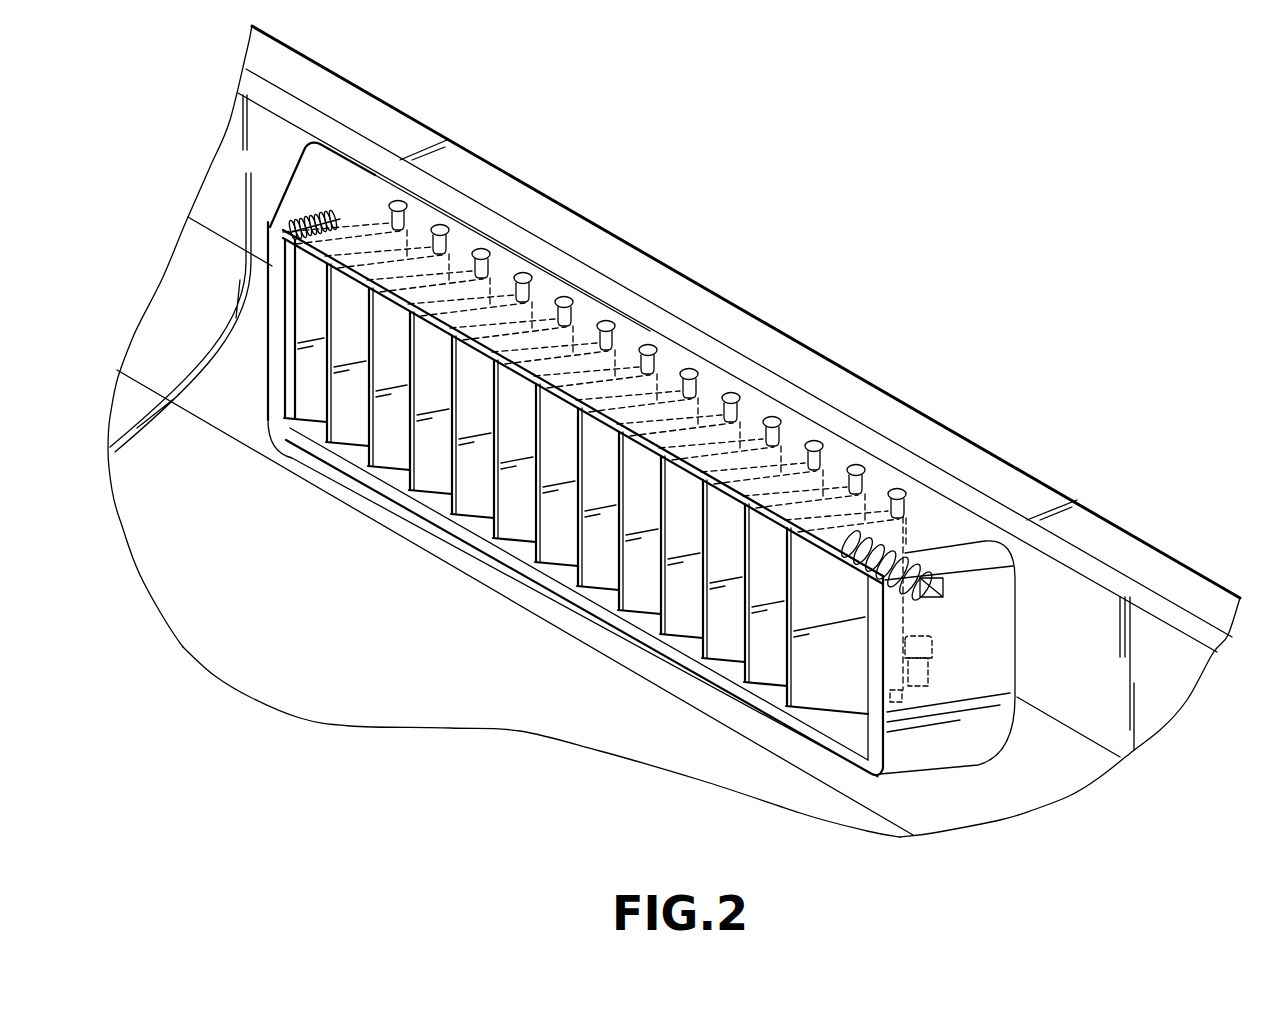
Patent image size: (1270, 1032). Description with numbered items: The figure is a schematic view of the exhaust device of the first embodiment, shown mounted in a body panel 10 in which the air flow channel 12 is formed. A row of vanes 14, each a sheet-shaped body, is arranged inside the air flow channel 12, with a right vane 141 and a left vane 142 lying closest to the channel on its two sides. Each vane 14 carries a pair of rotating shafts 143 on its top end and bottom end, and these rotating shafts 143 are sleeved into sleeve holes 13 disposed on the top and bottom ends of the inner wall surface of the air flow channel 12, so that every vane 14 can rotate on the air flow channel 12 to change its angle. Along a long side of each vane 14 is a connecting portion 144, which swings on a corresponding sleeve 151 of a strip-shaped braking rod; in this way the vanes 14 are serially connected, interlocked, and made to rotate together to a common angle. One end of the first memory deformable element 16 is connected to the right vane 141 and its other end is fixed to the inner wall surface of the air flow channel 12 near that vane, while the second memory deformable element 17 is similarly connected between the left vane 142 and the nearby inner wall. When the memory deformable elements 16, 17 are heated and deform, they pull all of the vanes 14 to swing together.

The vehicle body panel 10 is at (1136, 556).
The air flow channel 12 is at (832, 724).
The sleeve holes 13 is at (893, 488).
The vanes 14 is at (439, 462).
The right vane 141 is at (807, 657).
The left vane 142 is at (313, 395).
The rotating shafts 143 is at (905, 512).
The connecting portion 144 is at (917, 635).
The sleeves 151 is at (933, 657).
The first memory deformable element 16 is at (880, 548).
The second memory deformable element 17 is at (322, 213).